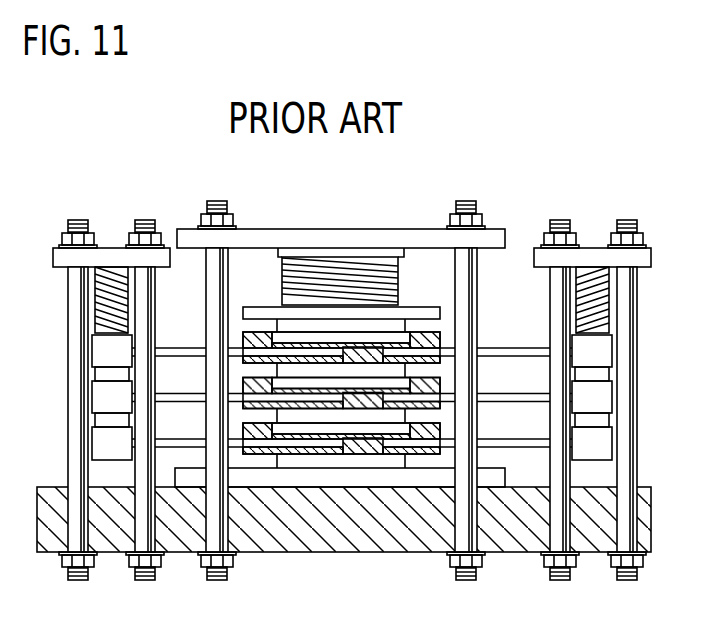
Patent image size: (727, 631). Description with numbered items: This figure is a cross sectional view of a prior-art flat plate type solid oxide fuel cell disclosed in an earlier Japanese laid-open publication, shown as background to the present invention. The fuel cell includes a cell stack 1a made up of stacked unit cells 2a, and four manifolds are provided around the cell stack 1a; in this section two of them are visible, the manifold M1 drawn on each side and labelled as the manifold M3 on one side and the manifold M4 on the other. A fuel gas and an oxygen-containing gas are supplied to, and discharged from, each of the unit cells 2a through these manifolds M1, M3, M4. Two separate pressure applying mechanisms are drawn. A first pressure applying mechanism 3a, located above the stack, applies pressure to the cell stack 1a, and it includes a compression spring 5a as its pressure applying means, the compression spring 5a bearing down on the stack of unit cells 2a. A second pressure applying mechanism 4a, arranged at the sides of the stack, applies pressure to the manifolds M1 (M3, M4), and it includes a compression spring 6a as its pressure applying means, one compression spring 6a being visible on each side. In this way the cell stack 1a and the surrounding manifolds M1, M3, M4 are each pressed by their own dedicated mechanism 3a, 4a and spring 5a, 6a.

The cell stack 1a is at (395, 472).
The unit cells 2a is at (413, 332).
The first pressure applying mechanism 3a is at (305, 222).
The second pressure applying mechanism 4a is at (50, 254).
The compression spring 5a is at (282, 280).
The compression spring 6a is at (97, 302).
The manifold M1 is at (352, 409).
The manifold M3 is at (84, 395).
The manifold M4 is at (620, 398).